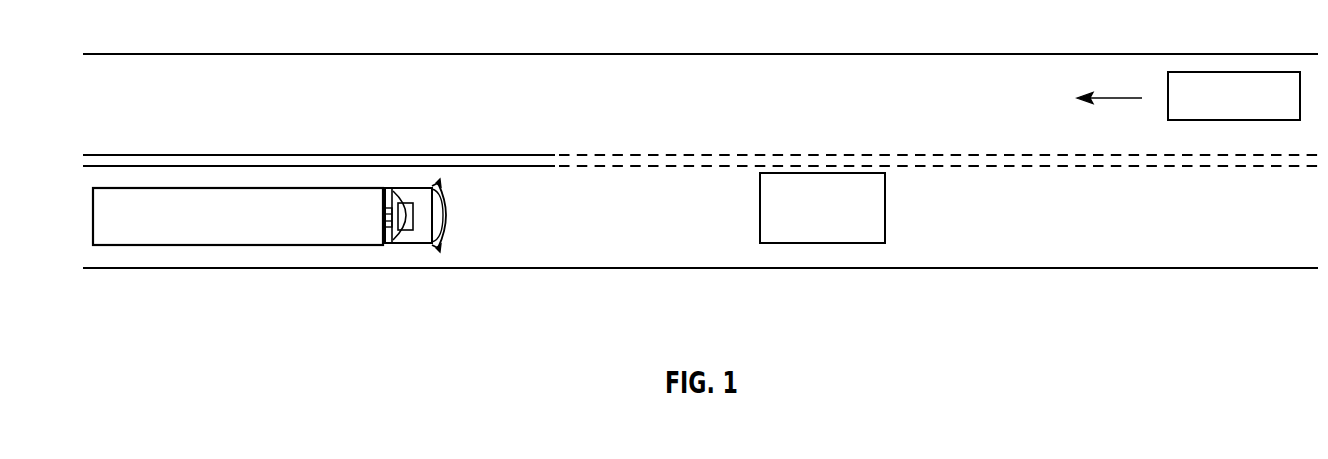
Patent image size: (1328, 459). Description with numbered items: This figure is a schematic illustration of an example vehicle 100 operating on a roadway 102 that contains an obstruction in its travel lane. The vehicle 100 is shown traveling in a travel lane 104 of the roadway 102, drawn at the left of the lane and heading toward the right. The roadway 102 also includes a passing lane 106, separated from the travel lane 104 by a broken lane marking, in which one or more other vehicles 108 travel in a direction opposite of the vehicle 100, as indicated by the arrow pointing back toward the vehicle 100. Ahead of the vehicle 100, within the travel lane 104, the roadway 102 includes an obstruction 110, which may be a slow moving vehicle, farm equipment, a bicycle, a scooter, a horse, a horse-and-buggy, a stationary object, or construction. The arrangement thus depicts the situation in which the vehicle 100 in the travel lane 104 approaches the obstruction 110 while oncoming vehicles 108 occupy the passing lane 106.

The vehicle 100 is at (177, 245).
The roadway 102 is at (682, 268).
The travel lane 104 is at (568, 220).
The passing lane 106 is at (568, 118).
The other vehicles 108 is at (1251, 107).
The obstruction 110 is at (840, 219).